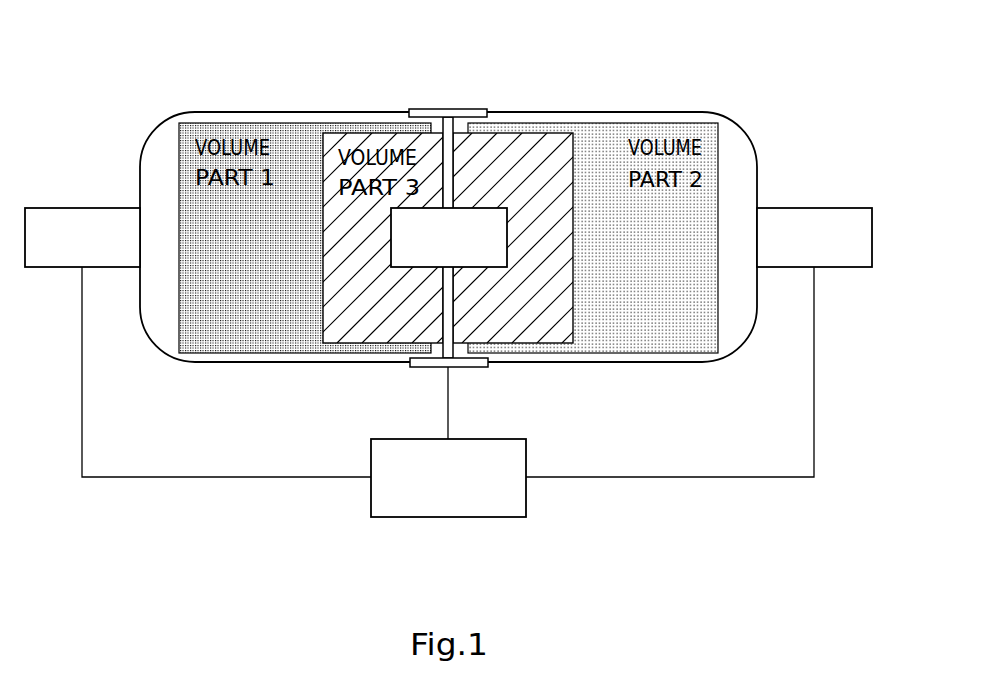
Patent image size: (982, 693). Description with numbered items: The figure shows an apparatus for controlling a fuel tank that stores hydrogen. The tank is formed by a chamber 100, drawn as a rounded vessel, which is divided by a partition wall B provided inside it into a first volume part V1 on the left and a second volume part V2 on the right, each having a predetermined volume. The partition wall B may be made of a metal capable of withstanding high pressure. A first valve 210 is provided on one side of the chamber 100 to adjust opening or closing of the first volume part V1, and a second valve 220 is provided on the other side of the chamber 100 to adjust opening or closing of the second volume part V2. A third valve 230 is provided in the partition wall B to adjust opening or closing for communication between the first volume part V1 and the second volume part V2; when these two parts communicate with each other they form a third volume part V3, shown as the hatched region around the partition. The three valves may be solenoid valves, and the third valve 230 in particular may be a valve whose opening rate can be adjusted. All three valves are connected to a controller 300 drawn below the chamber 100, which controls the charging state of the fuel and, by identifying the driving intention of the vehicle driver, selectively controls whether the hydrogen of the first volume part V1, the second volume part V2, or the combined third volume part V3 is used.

The chamber 100 is at (216, 112).
The volume part 1 V1 is at (302, 122).
The volume part 2 V2 is at (591, 122).
The volume part 3 V3 is at (359, 130).
The partition wall B is at (447, 108).
The valve 1 210 is at (82, 208).
The valve 2 220 is at (812, 208).
The valve 3 230 is at (487, 208).
The controller 300 is at (447, 517).